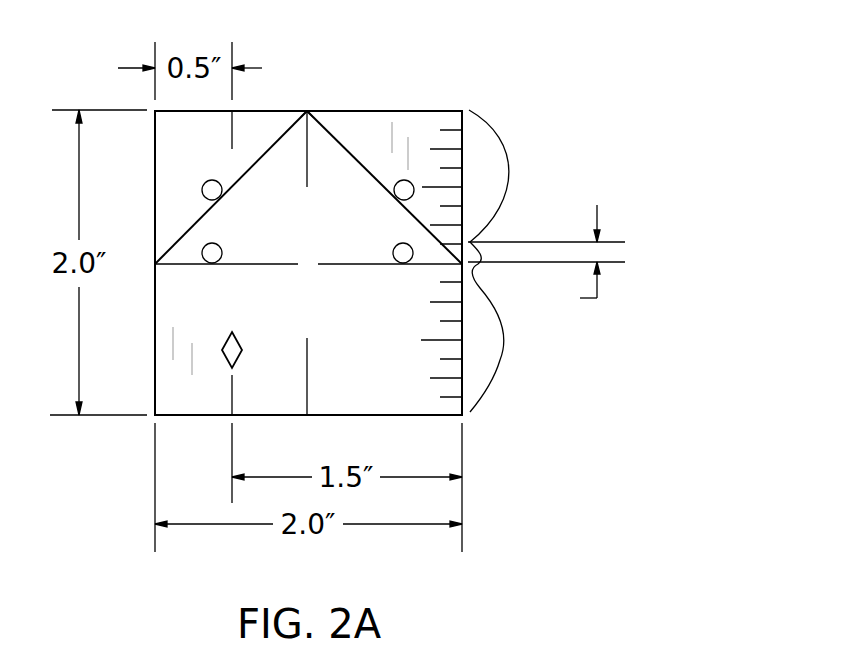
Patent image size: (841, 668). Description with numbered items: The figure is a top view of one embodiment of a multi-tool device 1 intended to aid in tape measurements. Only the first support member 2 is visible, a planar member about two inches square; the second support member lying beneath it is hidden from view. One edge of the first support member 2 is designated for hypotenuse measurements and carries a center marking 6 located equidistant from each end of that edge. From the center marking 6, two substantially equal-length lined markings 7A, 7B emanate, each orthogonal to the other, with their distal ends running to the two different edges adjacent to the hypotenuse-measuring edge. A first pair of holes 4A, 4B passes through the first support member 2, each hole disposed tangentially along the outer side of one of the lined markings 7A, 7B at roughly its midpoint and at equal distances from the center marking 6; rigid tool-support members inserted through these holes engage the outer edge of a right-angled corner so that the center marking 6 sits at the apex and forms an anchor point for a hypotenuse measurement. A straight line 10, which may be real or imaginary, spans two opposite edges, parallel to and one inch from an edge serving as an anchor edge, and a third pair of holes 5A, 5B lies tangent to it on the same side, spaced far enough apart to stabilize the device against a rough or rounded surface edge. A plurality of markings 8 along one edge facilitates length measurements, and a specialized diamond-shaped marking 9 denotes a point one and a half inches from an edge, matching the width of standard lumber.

The multi-tool device 1 is at (369, 80).
The first support member 2 is at (370, 372).
The hole of first pair of holes 4A is at (214, 189).
The hole of first pair of holes 4B is at (404, 190).
The hole of third pair of holes 5A is at (212, 253).
The hole of third pair of holes 5B is at (403, 253).
The center marking 6 is at (307, 111).
The lined marking 7A is at (250, 168).
The lined marking 7B is at (331, 134).
The plurality of markings 8 is at (472, 250).
The specialized marking 9 is at (238, 341).
The straight line 10 is at (180, 264).